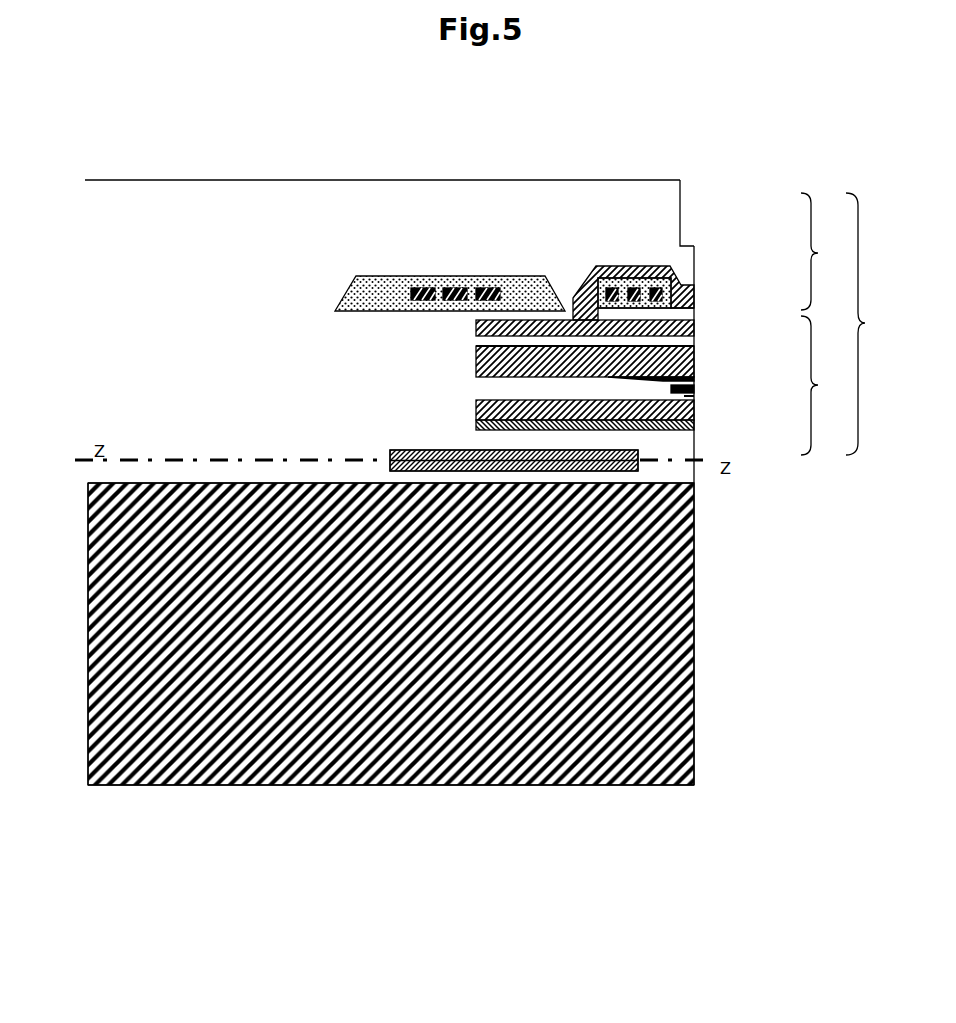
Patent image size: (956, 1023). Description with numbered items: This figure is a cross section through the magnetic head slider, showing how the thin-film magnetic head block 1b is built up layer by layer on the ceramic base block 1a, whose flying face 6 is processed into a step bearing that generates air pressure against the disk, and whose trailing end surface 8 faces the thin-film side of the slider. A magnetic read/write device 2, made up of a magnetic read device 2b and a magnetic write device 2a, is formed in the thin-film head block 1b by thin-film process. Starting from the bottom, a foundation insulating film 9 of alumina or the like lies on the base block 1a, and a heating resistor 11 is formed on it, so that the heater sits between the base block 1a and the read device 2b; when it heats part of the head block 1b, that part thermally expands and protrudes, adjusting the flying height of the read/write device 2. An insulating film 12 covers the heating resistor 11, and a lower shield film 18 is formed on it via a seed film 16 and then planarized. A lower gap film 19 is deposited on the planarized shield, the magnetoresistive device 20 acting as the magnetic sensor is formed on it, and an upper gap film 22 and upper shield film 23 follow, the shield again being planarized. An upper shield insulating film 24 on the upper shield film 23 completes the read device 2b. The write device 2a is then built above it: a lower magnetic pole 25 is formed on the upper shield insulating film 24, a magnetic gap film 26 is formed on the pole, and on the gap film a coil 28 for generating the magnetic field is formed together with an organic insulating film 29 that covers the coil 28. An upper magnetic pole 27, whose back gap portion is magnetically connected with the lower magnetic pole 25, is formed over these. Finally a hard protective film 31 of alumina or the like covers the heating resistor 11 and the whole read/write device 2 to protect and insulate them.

The base block 1a is at (186, 735).
The thin-film magnetic head block 1b is at (186, 187).
The magnetic read/write device 2 is at (863, 324).
The magnetic write device 2a is at (824, 251).
The magnetic read device 2b is at (825, 385).
The flying face 6 is at (686, 617).
The trailing end surface 8 is at (437, 172).
The foundation insulating film 9 is at (675, 467).
The heating resistor 11 is at (398, 440).
The insulating film 12 is at (675, 441).
The seed film 16 is at (690, 417).
The lower shield film 18 is at (688, 403).
The lower gap film 19 is at (688, 392).
The magnetoresistive device 20 is at (688, 385).
The upper gap film 22 is at (688, 375).
The upper shield film 23 is at (688, 350).
The upper shield insulating film 24 is at (688, 333).
The lower magnetic pole 25 is at (688, 306).
The magnetic gap film 26 is at (688, 292).
The upper magnetic pole 27 is at (688, 278).
The coil 28 is at (668, 267).
The organic insulating film 29 is at (645, 270).
The hard protective film 31 is at (498, 195).